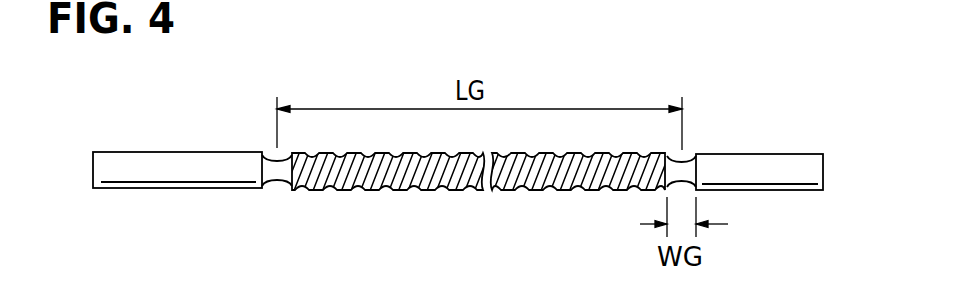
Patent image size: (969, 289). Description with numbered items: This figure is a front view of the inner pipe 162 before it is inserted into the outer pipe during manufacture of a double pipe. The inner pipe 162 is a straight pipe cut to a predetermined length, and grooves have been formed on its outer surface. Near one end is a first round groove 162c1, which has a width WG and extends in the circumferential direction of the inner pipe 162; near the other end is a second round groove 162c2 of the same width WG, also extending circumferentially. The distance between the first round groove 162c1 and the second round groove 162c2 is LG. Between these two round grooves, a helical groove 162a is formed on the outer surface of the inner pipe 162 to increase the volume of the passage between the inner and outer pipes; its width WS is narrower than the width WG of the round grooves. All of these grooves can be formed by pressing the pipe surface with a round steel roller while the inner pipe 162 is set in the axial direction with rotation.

The inner pipe 162 is at (458, 181).
The helical groove 162a is at (533, 180).
The first round groove 162c1 is at (274, 187).
The second round groove 162c2 is at (688, 152).